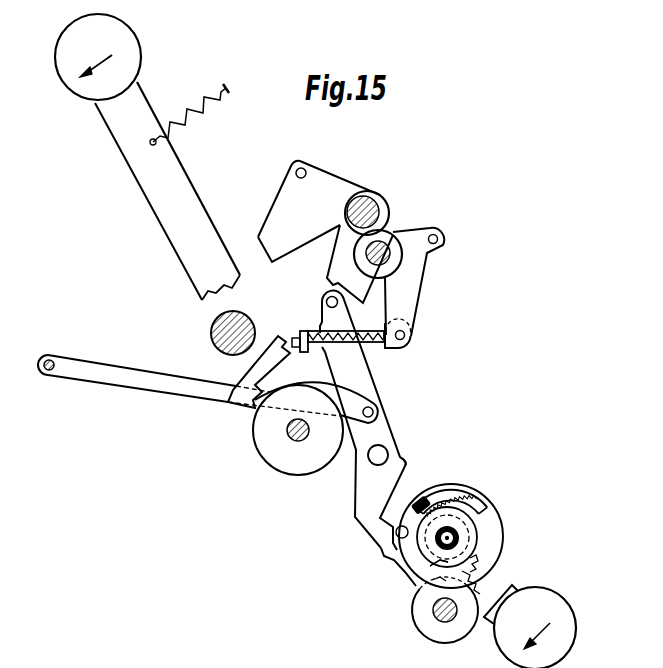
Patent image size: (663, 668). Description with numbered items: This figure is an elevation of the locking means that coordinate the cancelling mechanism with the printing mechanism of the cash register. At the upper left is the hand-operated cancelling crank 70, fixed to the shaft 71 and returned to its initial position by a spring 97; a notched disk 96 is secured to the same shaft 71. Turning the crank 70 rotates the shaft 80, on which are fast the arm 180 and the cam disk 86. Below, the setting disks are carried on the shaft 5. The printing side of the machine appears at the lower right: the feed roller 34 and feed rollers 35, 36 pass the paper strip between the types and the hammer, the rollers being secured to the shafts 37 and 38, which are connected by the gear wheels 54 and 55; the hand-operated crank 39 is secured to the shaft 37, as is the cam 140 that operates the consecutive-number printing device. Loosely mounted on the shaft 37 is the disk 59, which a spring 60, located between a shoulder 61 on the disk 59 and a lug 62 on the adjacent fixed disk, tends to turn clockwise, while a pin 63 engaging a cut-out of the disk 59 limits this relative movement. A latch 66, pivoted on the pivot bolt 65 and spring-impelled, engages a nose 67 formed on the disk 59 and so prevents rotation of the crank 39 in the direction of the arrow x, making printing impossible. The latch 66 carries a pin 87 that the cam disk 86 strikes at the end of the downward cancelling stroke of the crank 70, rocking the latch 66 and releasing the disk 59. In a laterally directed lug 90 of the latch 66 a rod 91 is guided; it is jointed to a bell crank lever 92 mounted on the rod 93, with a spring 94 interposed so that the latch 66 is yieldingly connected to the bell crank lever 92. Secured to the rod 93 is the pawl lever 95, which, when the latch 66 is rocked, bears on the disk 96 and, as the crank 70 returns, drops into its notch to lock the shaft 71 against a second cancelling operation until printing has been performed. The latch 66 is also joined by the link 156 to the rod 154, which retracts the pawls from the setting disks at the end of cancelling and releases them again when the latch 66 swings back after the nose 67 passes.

The hand-operated crank 70 is at (141, 49).
The spring 97 is at (198, 105).
The arm 180 is at (333, 158).
The cam disk 86 is at (291, 249).
The shaft 80 is at (371, 203).
The rod 93 is at (382, 249).
The bell crank lever 92 is at (421, 295).
The rod 91 is at (398, 349).
The spring 94 is at (374, 380).
The pin 87 is at (326, 303).
The lug 90 is at (308, 352).
The shaft 5 is at (210, 333).
The link 156 is at (149, 393).
The rod 154 is at (52, 371).
The pawl lever 95 is at (230, 405).
The disk 96 is at (265, 456).
The shaft 71 is at (298, 441).
The pivot bolt 65 is at (388, 452).
The latch 66 is at (407, 465).
The pin 63 is at (393, 533).
The nose 67 is at (384, 551).
The disk 59 is at (503, 541).
The shaft 37 is at (452, 537).
The spring 60 is at (464, 490).
The shoulder 61 is at (479, 512).
The lug 62 is at (420, 498).
The gear wheel 54 is at (478, 563).
The gear wheel 55 is at (478, 590).
The feed roller 35 is at (438, 567).
The feed roller 36 is at (439, 563).
The cam 140 is at (443, 584).
The feed roller 34 is at (445, 643).
The shaft 38 is at (437, 616).
The hand-operated crank 39 is at (576, 622).